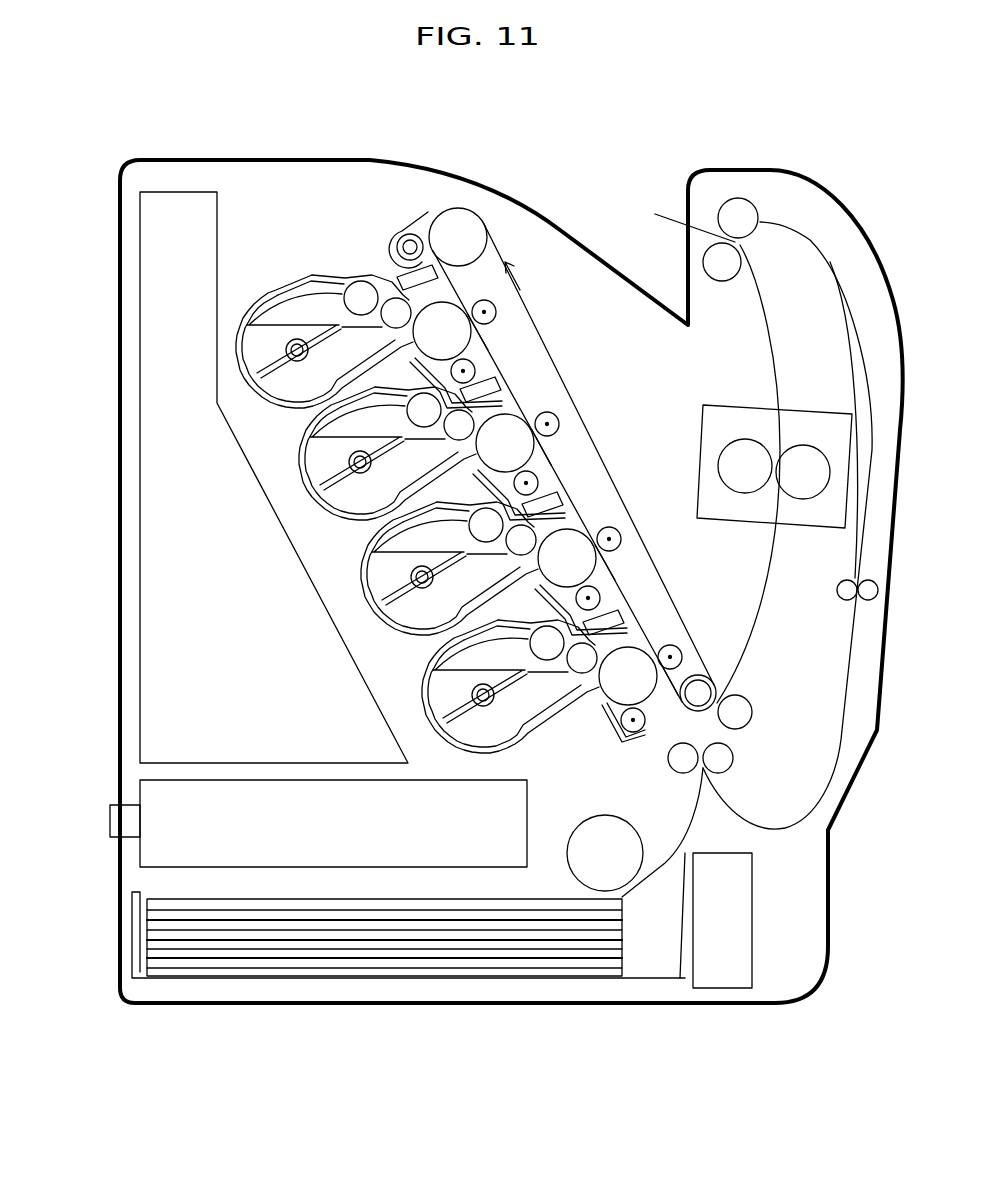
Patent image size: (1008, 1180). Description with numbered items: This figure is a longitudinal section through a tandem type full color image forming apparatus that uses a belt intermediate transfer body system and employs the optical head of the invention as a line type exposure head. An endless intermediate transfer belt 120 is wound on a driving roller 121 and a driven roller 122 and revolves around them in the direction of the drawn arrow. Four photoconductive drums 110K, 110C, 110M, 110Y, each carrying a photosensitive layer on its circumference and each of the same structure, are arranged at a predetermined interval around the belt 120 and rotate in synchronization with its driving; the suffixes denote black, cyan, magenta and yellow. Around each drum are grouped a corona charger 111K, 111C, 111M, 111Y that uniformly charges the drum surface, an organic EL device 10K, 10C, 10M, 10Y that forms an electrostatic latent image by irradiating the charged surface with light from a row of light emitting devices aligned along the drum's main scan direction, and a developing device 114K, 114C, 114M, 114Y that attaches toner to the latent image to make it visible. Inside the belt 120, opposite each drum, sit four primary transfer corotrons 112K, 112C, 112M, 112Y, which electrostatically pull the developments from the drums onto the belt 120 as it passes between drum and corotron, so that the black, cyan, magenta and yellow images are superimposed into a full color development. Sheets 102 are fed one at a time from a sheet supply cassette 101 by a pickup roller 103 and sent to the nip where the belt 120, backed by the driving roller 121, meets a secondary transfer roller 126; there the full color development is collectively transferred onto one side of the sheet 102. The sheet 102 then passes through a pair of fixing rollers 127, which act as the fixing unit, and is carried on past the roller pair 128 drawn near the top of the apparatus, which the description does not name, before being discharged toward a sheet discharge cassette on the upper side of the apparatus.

The organic EL device 10Y is at (377, 353).
The organic EL device 10M is at (440, 467).
The organic EL device 10C is at (500, 583).
The organic EL device 10K is at (588, 714).
The developing device 114Y is at (393, 290).
The developing device 114M is at (302, 427).
The developing device 114C is at (364, 545).
The developing device 114K is at (426, 660).
The photoconductive drum 110Y is at (486, 327).
The photoconductive drum 110M is at (555, 445).
The photoconductive drum 110C is at (615, 548).
The photoconductive drum 110K is at (665, 632).
The corona charger 111Y is at (476, 372).
The corona charger 111M is at (548, 472).
The corona charger 111C is at (600, 590).
The corona charger 111K is at (633, 748).
The primary transfer corotron 112Y is at (492, 300).
The primary transfer corotron 112M is at (556, 413).
The primary transfer corotron 112C is at (608, 522).
The primary transfer corotron 112K is at (682, 645).
The intermediate transfer belt 120 is at (547, 343).
The driving roller 121 is at (714, 678).
The driven roller 122 is at (470, 205).
The secondary transfer roller 126 is at (753, 708).
The fixing rollers 127 is at (740, 405).
The discharge rollers 128 is at (742, 267).
The sheet supply cassette 101 is at (130, 905).
The sheet 102 is at (357, 893).
The pickup roller 103 is at (575, 826).